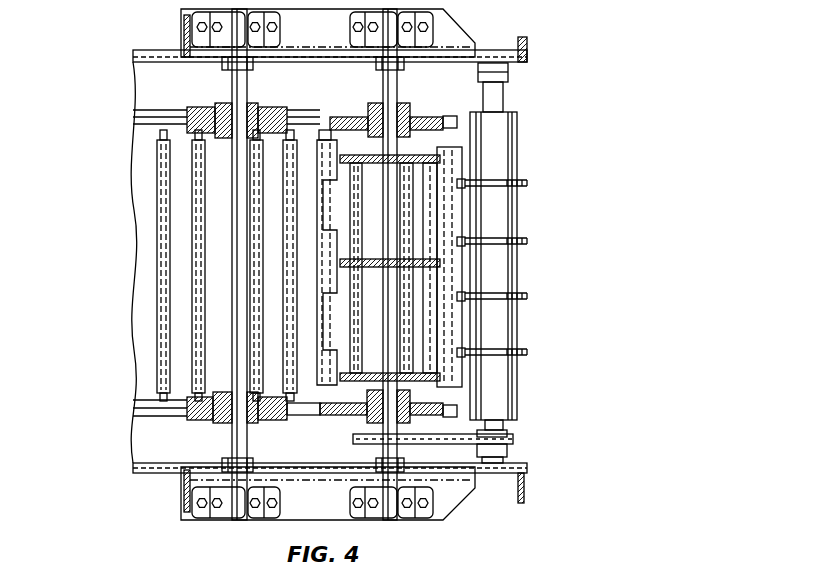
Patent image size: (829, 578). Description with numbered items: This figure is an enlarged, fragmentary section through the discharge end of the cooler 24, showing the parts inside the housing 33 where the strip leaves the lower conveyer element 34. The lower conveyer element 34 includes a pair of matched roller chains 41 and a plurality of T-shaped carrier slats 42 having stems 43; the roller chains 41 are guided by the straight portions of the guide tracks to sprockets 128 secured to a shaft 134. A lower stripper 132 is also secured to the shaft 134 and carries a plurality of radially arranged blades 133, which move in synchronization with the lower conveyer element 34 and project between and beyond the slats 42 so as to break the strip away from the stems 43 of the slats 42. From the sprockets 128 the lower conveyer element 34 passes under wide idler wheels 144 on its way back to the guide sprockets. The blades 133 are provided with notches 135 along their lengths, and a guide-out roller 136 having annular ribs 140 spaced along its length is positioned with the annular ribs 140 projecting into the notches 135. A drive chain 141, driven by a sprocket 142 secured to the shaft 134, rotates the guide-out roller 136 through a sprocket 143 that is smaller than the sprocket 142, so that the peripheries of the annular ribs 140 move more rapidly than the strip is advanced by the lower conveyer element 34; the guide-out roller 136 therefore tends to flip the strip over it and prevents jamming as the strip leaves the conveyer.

The cooler 24 is at (540, 49).
The housing 33 is at (135, 57).
The lower conveyer element 34 is at (155, 256).
The roller chains 41 is at (457, 412).
The carrier slats 42 is at (197, 222).
The stems 43 is at (198, 172).
The sprockets 128 is at (345, 416).
The lower stripper 132 is at (312, 399).
The blades 133 is at (327, 333).
The shaft 134 is at (385, 305).
The notches 135 is at (460, 174).
The guide-out roller 136 is at (510, 336).
The annular ribs 140 is at (528, 354).
The drive chain 141 is at (470, 445).
The sprocket 142 is at (410, 447).
The sprocket 143 is at (508, 450).
The idler wheels 144 is at (187, 110).